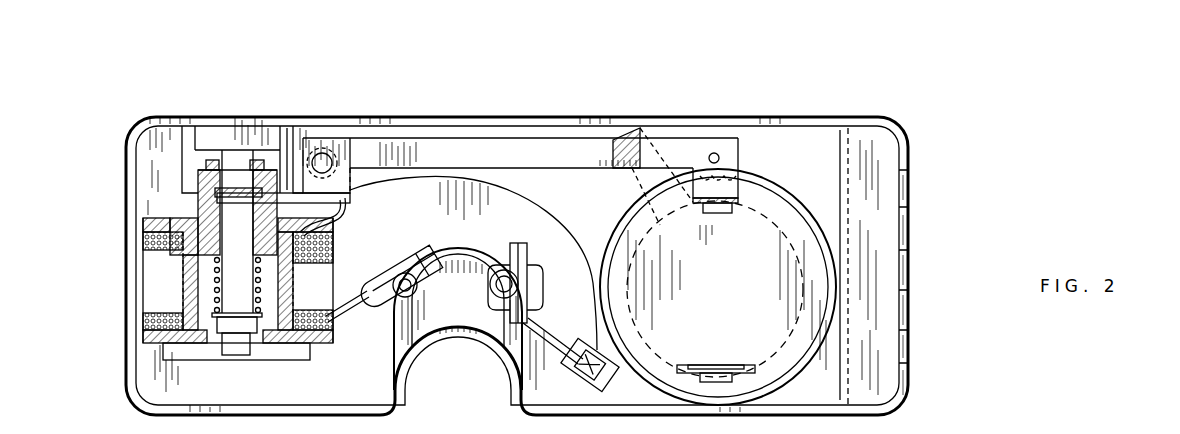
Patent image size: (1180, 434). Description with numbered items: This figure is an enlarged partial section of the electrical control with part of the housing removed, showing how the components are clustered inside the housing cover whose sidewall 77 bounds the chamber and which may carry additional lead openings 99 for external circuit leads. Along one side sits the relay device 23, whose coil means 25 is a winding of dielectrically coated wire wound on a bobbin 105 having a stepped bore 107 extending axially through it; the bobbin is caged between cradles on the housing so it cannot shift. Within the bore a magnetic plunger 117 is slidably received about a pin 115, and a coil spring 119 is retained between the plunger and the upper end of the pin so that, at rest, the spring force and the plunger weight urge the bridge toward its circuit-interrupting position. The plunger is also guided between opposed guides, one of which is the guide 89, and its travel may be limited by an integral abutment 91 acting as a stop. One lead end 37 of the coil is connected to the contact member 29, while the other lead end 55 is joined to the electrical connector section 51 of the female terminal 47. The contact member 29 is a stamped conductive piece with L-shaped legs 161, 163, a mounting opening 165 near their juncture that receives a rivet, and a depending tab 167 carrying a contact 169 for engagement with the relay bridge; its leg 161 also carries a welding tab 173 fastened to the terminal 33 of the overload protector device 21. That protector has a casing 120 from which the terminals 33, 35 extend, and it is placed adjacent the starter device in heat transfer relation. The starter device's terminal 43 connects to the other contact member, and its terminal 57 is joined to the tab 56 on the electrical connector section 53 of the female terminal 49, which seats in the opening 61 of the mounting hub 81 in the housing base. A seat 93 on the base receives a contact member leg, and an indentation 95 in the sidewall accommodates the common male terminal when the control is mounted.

The overload protector device 21 is at (700, 278).
The relay device 23 is at (160, 359).
The coil means 25 is at (148, 322).
The contact member 29 is at (528, 132).
The terminal 33 is at (720, 212).
The terminal 35 is at (716, 364).
The connection end of coil means 37 is at (355, 212).
The terminal of starter device 43 is at (635, 180).
The female terminal 47 is at (418, 286).
The female terminal 49 is at (497, 291).
The electrical connector section 51 is at (407, 250).
The electrical connector section 53 is at (522, 262).
The connection end of coil means 55 is at (350, 310).
The tab 56 is at (548, 350).
The terminal of starter device 57 is at (598, 368).
The opening 61 is at (543, 292).
The sidewall 77 is at (697, 117).
The mounting hub 81 is at (520, 210).
The guide 89 is at (290, 132).
The abutment 91 is at (256, 150).
The seat 93 is at (293, 142).
The indentation 95 is at (420, 380).
The lead openings 99 is at (912, 192).
The bobbin 105 is at (150, 225).
The stepped bore 107 is at (183, 283).
The pin 115 is at (237, 348).
The plunger 117 is at (175, 268).
The coil spring 119 is at (165, 298).
The casing 120 is at (810, 222).
The leg 161 is at (445, 138).
The leg 163 is at (352, 190).
The mounting opening 165 is at (330, 158).
The depending tab 167 is at (240, 188).
The contact 169 is at (226, 170).
The welding tab 173 is at (700, 205).